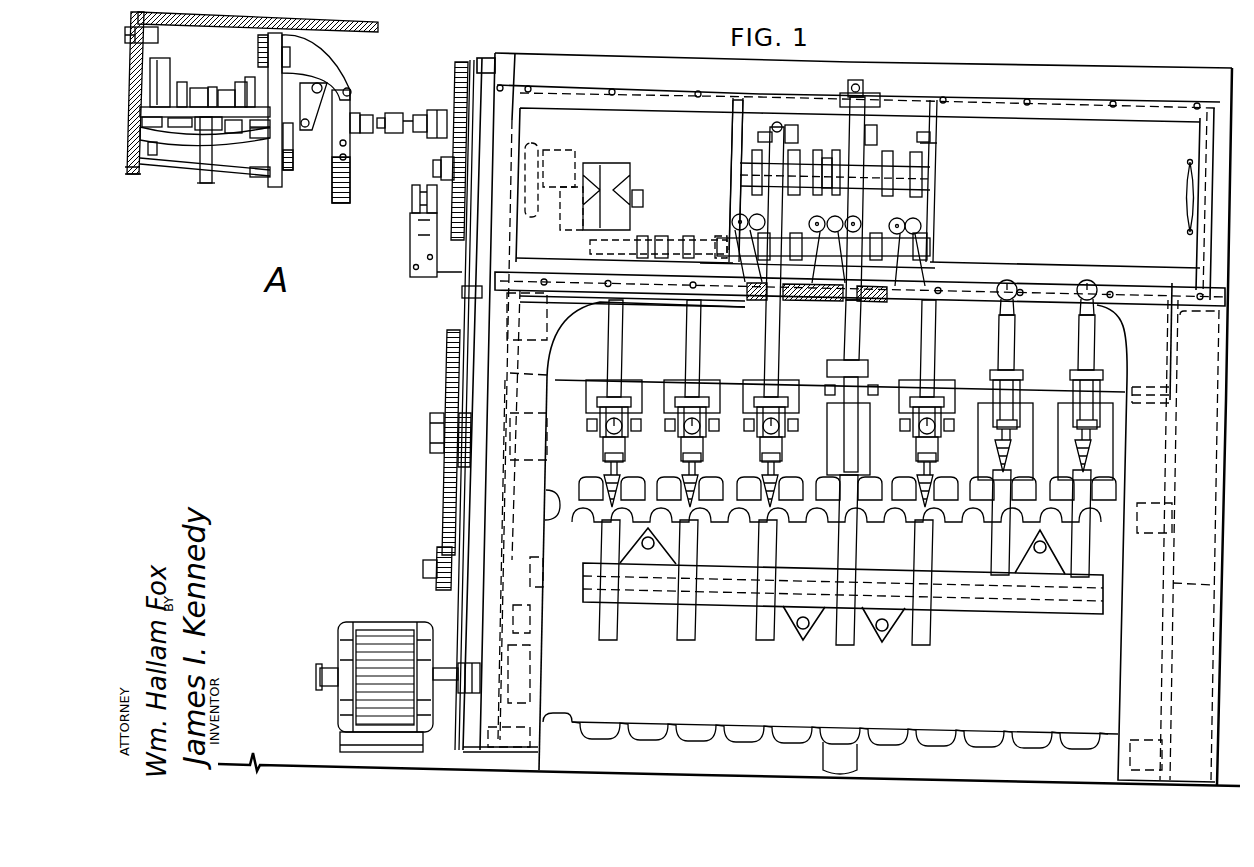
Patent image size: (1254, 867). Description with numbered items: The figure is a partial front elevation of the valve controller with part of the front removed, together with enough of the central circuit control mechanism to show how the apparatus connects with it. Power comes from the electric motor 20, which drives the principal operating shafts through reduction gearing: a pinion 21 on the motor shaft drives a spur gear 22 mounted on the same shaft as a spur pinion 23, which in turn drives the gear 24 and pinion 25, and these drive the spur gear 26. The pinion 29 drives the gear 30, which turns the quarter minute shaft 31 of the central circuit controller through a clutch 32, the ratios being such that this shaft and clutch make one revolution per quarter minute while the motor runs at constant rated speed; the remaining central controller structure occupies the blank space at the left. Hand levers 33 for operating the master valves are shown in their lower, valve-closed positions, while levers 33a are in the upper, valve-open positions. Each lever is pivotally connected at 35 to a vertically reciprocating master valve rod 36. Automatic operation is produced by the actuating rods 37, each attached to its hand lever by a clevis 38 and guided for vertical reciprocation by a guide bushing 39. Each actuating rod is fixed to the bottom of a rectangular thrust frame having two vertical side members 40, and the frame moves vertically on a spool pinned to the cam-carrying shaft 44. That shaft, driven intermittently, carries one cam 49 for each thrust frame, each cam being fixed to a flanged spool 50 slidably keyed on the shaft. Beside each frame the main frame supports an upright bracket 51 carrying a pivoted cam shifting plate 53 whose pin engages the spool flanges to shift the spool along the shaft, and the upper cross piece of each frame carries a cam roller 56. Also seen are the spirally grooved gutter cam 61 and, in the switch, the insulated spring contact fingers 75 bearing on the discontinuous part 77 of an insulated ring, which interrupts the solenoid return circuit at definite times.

The electric motor 20 is at (374, 687).
The pinion 21 is at (460, 694).
The spur gear 22 is at (466, 606).
The spur pinion 23 is at (438, 580).
The gear 24 is at (446, 512).
The pinion 25 is at (463, 468).
The spur gear 26 is at (466, 293).
The pinion 29 is at (447, 172).
The gear 30 is at (462, 68).
The quarter minute shaft 31 is at (368, 120).
The clutch 32 is at (432, 114).
The hand lever 33 is at (624, 398).
The hand lever in upper position 33a is at (1011, 281).
The pivotal connection 35 is at (870, 396).
The master valve rod 36 is at (622, 480).
The actuating rod 37 is at (685, 330).
The clevis 38 is at (1021, 374).
The guide bushing 39 is at (783, 300).
The vertical side member 40 is at (738, 172).
The cam-carrying shaft 44 is at (873, 165).
The cam 49 is at (814, 148).
The flanged spool 50 is at (746, 165).
The upright bracket 51 is at (812, 292).
The cam shifting plate 53 is at (814, 212).
The cam roller 56 is at (792, 130).
The spirally grooved gutter cam 61 is at (628, 170).
The insulated spring contact finger 75 is at (410, 225).
The discontinuous part of insulated metal ring 77 is at (412, 192).